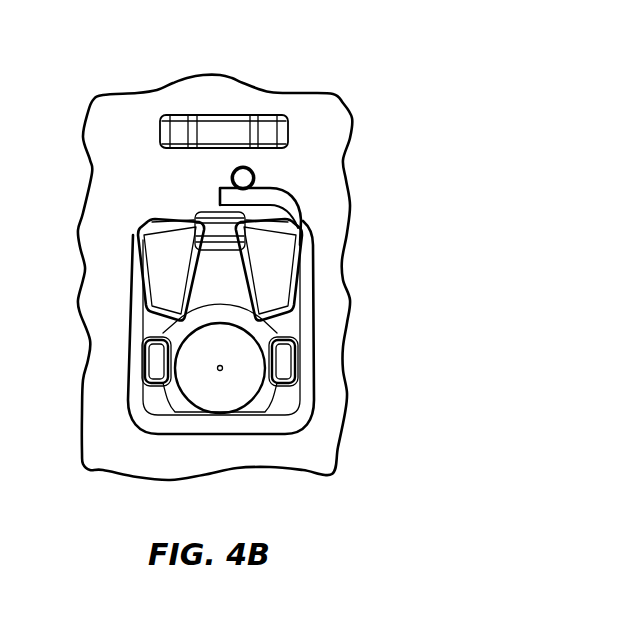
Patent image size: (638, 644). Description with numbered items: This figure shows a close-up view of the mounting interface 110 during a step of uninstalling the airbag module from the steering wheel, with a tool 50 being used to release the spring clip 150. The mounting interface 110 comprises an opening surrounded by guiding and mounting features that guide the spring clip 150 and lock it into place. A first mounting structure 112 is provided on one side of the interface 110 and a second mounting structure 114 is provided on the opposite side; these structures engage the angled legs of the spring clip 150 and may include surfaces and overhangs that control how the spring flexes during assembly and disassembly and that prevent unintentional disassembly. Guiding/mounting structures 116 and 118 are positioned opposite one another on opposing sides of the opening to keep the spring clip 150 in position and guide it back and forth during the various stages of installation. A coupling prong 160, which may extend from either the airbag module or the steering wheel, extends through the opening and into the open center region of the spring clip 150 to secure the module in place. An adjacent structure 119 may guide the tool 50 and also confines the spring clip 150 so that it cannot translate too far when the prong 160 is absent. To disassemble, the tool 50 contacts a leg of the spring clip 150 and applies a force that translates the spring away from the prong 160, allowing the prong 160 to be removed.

The mounting interface 110 is at (336, 91).
The adjacent structure 119 is at (222, 130).
The tool 50 is at (256, 177).
The spring clip 150 is at (307, 415).
The second mounting structure 114 is at (155, 263).
The first mounting structure 112 is at (285, 263).
The guiding/mounting structure 118 is at (155, 365).
The guiding/mounting structure 116 is at (285, 365).
The coupling prong 160 is at (230, 398).